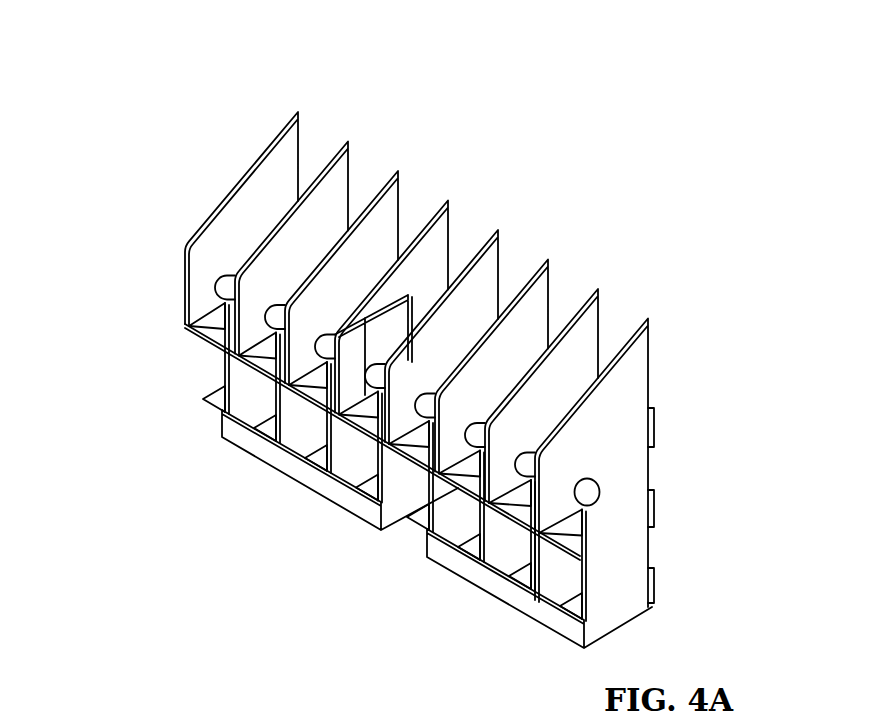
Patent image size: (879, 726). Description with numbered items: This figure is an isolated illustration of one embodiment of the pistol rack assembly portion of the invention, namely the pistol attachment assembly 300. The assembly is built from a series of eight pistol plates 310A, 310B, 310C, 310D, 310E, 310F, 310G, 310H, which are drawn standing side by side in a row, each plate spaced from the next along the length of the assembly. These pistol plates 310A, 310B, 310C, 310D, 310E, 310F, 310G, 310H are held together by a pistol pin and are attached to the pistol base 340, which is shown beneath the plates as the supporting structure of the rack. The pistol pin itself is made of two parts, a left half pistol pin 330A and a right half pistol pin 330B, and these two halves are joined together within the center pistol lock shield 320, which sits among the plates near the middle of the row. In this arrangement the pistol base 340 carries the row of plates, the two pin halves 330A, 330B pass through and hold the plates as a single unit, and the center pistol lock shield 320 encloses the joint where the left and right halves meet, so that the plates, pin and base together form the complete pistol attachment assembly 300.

The pistol attachment assembly 300 is at (614, 106).
The pistol plate 310A is at (286, 143).
The pistol plate 310B is at (342, 174).
The pistol plate 310C is at (384, 224).
The pistol plate 310D is at (437, 244).
The pistol plate 310E is at (478, 286).
The pistol plate 310F is at (533, 304).
The pistol plate 310G is at (510, 480).
The pistol plate 310H is at (623, 403).
The center pistol lock shield 320 is at (400, 322).
The left half pistol pin 330A is at (223, 283).
The right half pistol pin 330B is at (527, 458).
The pistol base 340 is at (272, 452).